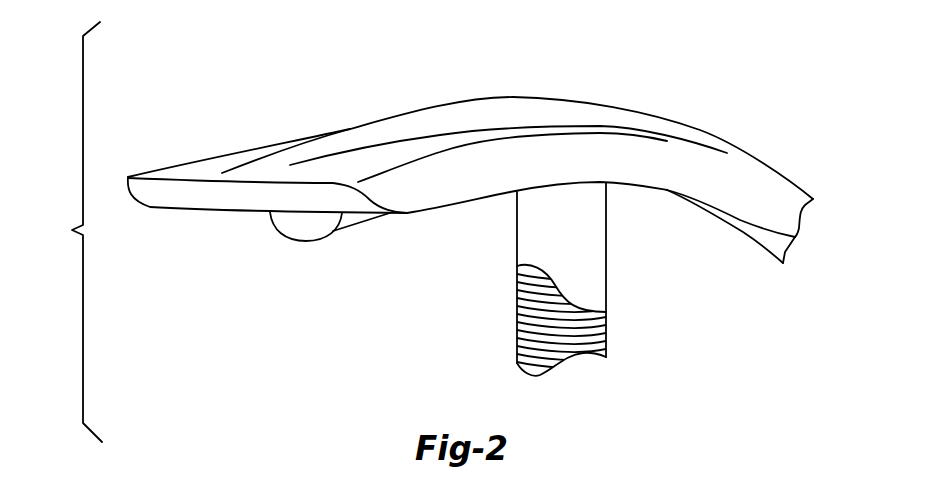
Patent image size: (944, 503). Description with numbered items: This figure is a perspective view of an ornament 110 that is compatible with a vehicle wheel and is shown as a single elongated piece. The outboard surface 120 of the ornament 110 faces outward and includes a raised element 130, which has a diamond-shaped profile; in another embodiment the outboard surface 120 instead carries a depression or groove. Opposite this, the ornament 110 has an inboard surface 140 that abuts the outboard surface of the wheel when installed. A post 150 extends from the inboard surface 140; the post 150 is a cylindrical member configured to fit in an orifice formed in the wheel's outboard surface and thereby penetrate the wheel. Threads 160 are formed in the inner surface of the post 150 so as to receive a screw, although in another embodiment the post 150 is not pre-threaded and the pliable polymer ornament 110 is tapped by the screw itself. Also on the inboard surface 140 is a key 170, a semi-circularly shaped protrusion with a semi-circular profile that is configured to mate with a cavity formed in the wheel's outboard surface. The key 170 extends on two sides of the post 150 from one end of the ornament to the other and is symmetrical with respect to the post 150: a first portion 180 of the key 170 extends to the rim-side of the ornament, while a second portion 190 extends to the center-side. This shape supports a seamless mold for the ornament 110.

The ornament 110 is at (70, 232).
The outboard surface 120 is at (266, 127).
The raised element 130 is at (484, 117).
The inboard surface 140 is at (617, 208).
The post 150 is at (597, 295).
The threads 160 is at (557, 337).
The key 170 is at (309, 226).
The first portion of the key 180 is at (268, 217).
The second portion of the key 190 is at (802, 242).